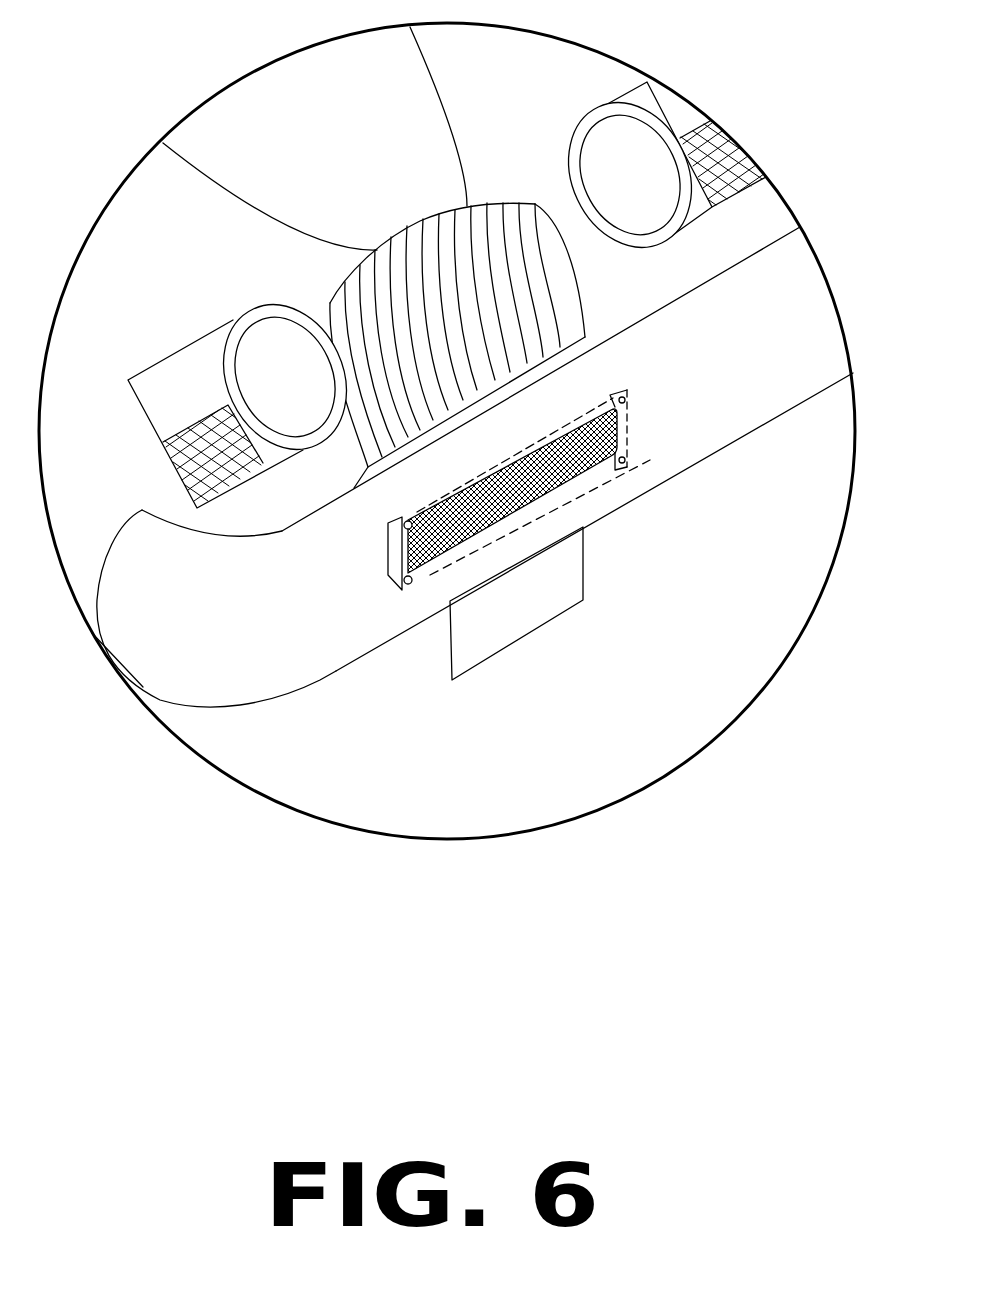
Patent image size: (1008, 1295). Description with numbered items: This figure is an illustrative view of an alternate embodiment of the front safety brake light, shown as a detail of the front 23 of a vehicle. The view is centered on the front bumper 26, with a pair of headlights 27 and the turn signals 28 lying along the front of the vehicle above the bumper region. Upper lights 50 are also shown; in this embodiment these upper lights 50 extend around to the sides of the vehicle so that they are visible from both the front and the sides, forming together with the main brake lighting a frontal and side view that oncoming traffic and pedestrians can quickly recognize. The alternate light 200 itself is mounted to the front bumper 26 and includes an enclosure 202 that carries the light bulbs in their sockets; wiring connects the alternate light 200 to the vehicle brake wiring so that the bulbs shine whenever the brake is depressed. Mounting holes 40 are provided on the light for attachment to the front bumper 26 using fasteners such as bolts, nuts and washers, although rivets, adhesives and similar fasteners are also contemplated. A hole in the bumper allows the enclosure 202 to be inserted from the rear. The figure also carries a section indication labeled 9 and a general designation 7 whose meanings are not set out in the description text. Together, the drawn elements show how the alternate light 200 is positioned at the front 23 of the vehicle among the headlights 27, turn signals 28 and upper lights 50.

The connector assembly 7 is at (527, 513).
The section line 9- 9 is at (594, 397).
The front 23 is at (330, 465).
The front bumper 26 is at (340, 647).
The headlights 27 is at (262, 345).
The turn signals 28 is at (177, 463).
The mounting holes 40 is at (547, 423).
The upper lights 50 is at (167, 392).
The alternate light 200 is at (390, 518).
The enclosure 202 is at (560, 497).